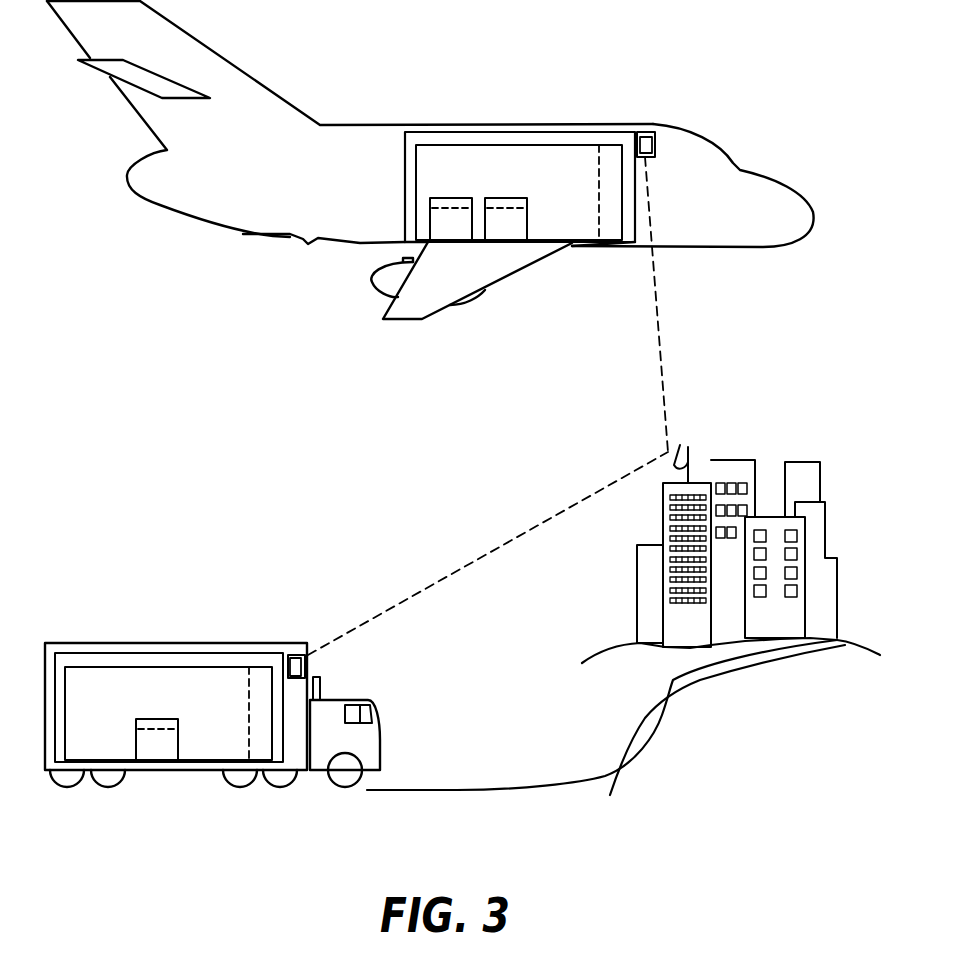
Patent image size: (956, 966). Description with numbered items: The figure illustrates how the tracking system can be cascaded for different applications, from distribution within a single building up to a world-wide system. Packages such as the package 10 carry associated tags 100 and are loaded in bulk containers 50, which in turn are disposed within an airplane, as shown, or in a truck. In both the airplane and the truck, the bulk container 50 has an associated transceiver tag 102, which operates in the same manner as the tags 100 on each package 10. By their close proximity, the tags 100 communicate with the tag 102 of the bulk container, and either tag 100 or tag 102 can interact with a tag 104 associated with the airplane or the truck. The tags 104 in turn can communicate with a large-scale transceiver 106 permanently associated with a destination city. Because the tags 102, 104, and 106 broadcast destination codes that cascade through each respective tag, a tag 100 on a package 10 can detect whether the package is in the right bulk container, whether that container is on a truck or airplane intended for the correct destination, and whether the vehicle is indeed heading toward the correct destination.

The package 10 is at (453, 230).
The bulk container 50 is at (528, 145).
The tag 100 is at (505, 198).
The transceiver tag 102 is at (608, 153).
The tag 104 is at (646, 132).
The large-scale transceiver 106 is at (695, 483).